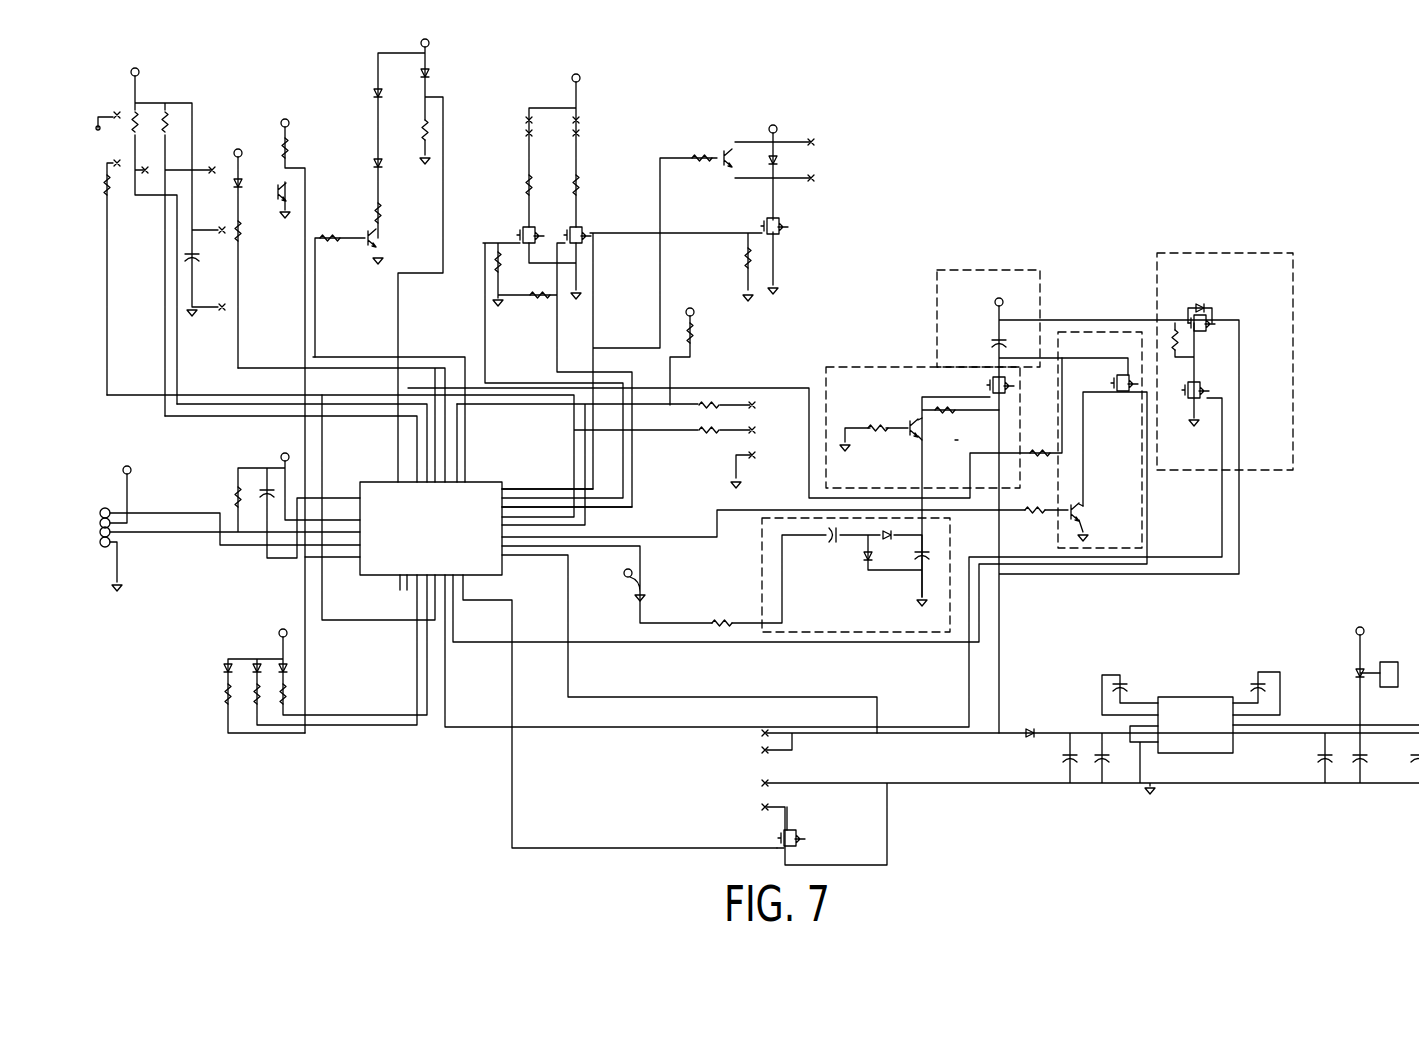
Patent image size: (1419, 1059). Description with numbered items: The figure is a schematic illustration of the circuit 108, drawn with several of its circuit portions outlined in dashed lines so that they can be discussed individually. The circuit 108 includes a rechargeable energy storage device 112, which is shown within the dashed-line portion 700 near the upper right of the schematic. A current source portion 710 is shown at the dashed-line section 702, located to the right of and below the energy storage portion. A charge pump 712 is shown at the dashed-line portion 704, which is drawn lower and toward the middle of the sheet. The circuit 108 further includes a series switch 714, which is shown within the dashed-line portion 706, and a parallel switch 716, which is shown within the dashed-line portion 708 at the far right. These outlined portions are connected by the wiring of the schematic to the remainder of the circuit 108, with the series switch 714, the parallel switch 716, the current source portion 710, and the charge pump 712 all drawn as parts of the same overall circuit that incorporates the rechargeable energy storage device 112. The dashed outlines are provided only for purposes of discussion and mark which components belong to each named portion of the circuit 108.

The circuit 108 is at (992, 88).
The rechargeable energy storage device 112 is at (1015, 298).
The portion 700 is at (952, 268).
The section 702 is at (1118, 328).
The portion 704 is at (760, 596).
The portion 706 is at (838, 362).
The portion 708 is at (1294, 350).
The current source portion 710 is at (1113, 530).
The charge pump 712 is at (888, 606).
The series switch 714 is at (882, 392).
The parallel switch 716 is at (1253, 272).